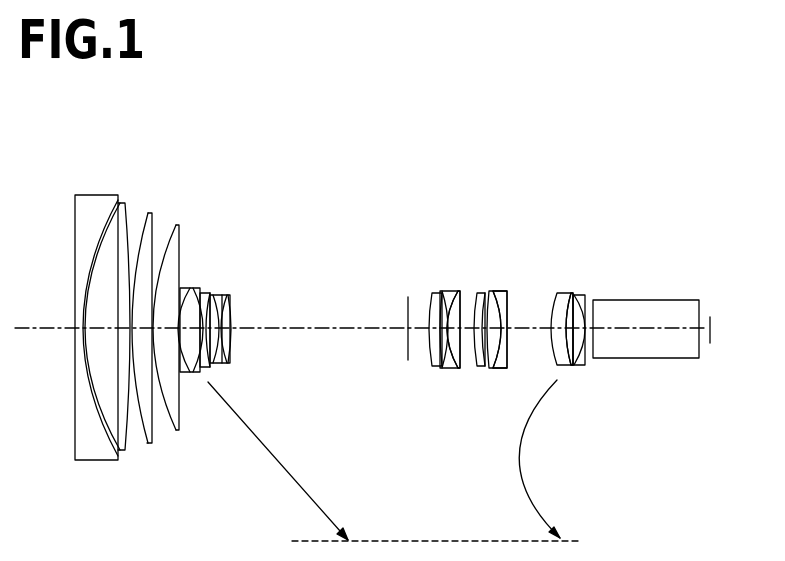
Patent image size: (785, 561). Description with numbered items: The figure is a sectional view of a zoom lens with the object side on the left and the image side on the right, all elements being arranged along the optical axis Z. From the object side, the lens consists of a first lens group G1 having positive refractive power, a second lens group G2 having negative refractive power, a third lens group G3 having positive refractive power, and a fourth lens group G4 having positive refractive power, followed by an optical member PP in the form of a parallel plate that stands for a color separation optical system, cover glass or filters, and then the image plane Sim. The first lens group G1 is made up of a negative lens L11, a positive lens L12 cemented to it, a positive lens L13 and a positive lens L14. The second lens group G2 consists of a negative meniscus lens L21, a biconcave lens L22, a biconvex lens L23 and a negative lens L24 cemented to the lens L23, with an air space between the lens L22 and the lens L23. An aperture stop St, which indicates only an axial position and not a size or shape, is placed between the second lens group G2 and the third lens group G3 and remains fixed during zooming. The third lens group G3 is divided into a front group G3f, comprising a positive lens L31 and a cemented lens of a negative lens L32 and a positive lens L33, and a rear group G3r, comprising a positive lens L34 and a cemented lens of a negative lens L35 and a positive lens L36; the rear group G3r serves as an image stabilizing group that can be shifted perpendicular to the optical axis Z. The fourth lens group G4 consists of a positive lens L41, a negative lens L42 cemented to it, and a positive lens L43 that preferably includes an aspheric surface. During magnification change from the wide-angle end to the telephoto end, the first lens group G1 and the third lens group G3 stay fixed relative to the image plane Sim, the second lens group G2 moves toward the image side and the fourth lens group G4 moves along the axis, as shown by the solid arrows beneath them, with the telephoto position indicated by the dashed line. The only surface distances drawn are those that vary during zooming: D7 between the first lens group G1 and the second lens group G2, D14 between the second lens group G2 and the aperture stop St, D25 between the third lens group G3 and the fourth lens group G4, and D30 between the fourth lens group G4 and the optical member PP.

The optical axis Z is at (33, 326).
The first lens group G1 is at (187, 107).
The lens L11 is at (97, 202).
The lens L12 is at (119, 203).
The lens L13 is at (149, 212).
The lens L14 is at (177, 225).
The surface distance D7 is at (177, 326).
The second lens group G2 is at (333, 185).
The lens L21 is at (188, 286).
The lens L22 is at (205, 292).
The lens L23 is at (213, 295).
The lens L24 is at (225, 295).
The surface distance D14 is at (313, 318).
The aperture stop St is at (408, 360).
The third lens group G3 is at (538, 158).
The front group G3f is at (435, 188).
The rear group G3r is at (538, 188).
The lens L31 is at (433, 293).
The lens L32 is at (443, 290).
The lens L33 is at (455, 290).
The lens L34 is at (478, 292).
The lens L35 is at (490, 290).
The lens L36 is at (503, 290).
The surface distance D25 is at (526, 320).
The fourth lens group G4 is at (655, 158).
The lens L41 is at (560, 293).
The lens L42 is at (567, 293).
The lens L43 is at (578, 294).
The surface distance D30 is at (595, 322).
The optical member PP is at (673, 300).
The image plane Sim is at (709, 317).